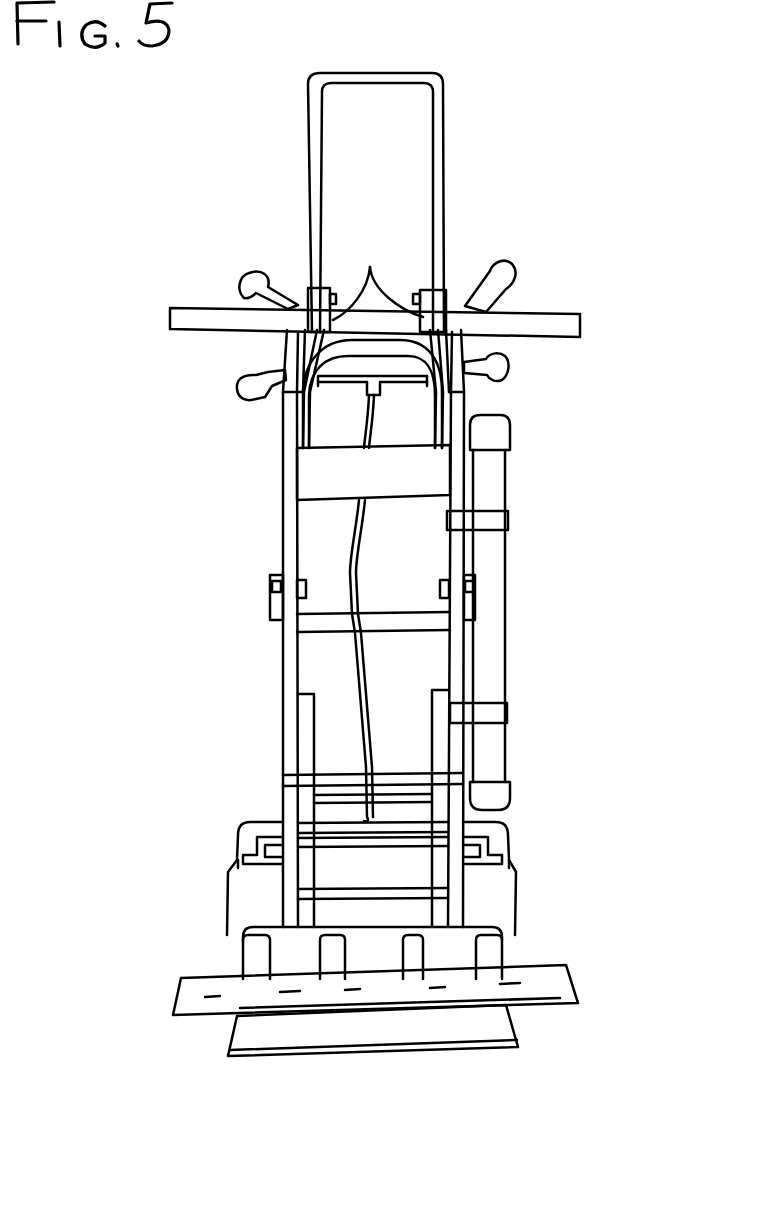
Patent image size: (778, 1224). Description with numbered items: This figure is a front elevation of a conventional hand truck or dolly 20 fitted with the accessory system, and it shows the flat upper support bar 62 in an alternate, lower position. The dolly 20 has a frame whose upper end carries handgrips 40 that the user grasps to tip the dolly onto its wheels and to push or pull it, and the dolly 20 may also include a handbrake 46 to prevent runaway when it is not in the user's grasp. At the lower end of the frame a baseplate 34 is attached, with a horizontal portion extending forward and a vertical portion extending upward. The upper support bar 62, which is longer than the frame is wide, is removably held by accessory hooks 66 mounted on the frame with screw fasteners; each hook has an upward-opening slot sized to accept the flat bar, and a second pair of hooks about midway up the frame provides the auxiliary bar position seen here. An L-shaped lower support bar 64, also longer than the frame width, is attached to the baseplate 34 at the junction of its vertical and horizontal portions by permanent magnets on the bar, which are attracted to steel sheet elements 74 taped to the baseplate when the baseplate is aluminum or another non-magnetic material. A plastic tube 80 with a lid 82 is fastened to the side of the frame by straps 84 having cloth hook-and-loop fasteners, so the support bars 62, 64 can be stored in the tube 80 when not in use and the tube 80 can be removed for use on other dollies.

The dolly 20 is at (464, 408).
The baseplate 34 is at (405, 1062).
The handgrips 40 is at (480, 276).
The handbrake 46 is at (277, 383).
The upper support bar 62 is at (562, 313).
The lower support bar 64 is at (573, 987).
The accessory hooks 66 is at (378, 527).
The steel sheet elements 74 is at (428, 952).
The tube 80 is at (507, 662).
The lid 82 is at (510, 437).
The straps 84 is at (508, 512).